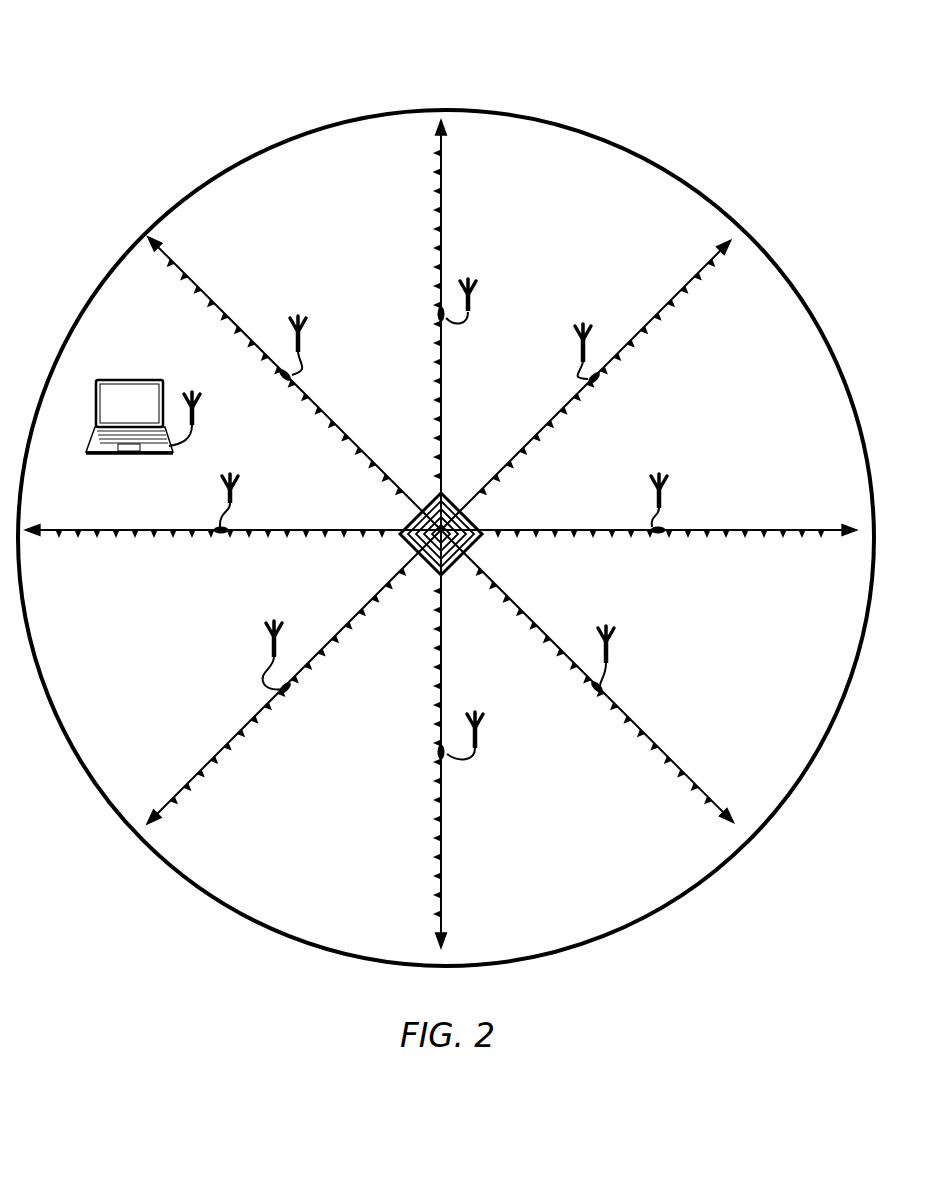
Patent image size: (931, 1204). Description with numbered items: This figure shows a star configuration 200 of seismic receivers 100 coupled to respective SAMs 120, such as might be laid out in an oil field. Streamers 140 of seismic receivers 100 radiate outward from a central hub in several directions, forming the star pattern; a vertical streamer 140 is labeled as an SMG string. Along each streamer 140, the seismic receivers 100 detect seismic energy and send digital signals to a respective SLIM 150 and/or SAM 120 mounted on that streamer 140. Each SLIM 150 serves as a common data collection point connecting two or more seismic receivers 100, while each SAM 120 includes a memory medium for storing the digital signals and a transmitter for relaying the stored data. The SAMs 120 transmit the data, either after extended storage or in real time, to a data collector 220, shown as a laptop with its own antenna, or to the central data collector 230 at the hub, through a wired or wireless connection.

The star configuration 200 is at (637, 53).
The seismic receiver 100 is at (440, 210).
The streamer 140 is at (443, 161).
The SAM 120 is at (472, 282).
The SLIM 150 is at (436, 306).
The data collector 220 is at (138, 380).
The data collector 230 is at (478, 540).